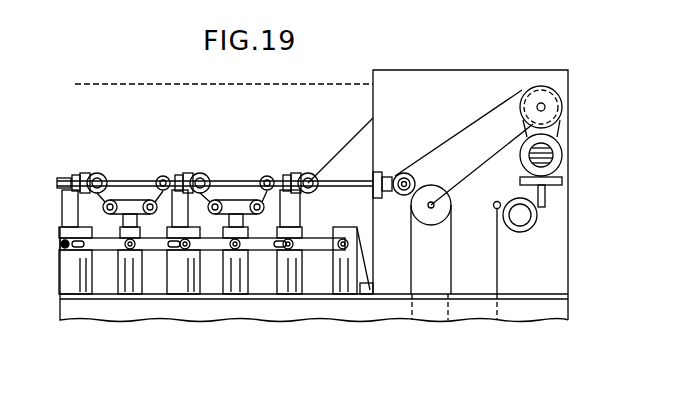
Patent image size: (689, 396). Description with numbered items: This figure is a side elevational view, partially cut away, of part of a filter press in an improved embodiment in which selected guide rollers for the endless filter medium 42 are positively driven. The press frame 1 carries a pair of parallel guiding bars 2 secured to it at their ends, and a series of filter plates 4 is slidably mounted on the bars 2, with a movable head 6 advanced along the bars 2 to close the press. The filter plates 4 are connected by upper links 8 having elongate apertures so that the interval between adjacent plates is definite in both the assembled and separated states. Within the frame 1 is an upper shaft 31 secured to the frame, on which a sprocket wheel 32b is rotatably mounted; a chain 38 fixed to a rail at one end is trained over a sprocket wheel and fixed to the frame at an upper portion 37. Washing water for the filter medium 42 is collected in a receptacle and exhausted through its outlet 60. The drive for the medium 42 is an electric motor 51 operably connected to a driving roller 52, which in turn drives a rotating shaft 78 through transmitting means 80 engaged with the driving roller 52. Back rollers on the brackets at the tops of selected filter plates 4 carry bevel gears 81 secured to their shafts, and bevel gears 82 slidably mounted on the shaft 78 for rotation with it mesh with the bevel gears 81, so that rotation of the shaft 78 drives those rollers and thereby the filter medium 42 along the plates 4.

The press frame 1 is at (498, 70).
The guiding bars 2 is at (227, 313).
The filter plates 4 is at (67, 267).
The movable head 6 is at (350, 225).
The upper links 8 is at (107, 250).
The upper shaft 31 is at (413, 224).
The sprocket wheel 32b is at (438, 193).
The upper portion of frame 37 is at (496, 209).
The chain 38 is at (497, 277).
The filter medium 42 is at (347, 84).
The electric motor 51 is at (550, 160).
The driving roller 52 is at (562, 108).
The outlet 60 is at (527, 230).
The rotating shaft 78 is at (223, 188).
The transmitting means 80 is at (478, 104).
The bevel gears 81 is at (107, 172).
The bevel gears 82 is at (88, 172).